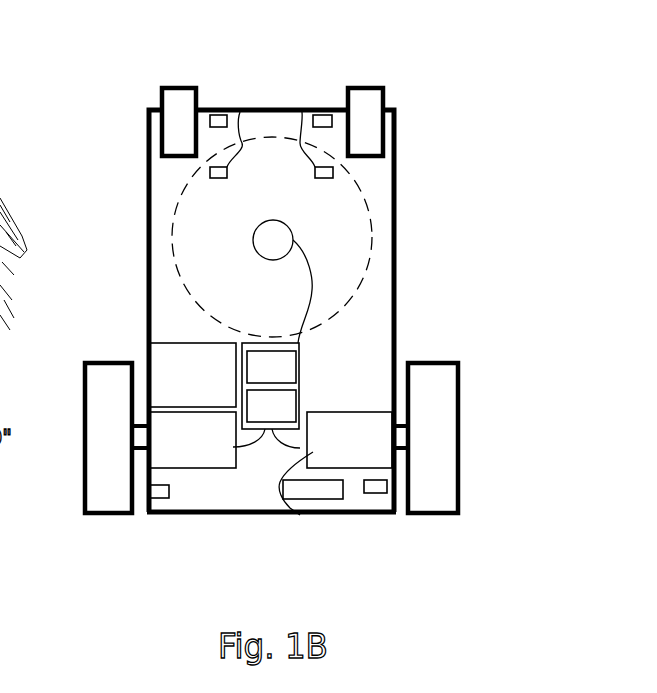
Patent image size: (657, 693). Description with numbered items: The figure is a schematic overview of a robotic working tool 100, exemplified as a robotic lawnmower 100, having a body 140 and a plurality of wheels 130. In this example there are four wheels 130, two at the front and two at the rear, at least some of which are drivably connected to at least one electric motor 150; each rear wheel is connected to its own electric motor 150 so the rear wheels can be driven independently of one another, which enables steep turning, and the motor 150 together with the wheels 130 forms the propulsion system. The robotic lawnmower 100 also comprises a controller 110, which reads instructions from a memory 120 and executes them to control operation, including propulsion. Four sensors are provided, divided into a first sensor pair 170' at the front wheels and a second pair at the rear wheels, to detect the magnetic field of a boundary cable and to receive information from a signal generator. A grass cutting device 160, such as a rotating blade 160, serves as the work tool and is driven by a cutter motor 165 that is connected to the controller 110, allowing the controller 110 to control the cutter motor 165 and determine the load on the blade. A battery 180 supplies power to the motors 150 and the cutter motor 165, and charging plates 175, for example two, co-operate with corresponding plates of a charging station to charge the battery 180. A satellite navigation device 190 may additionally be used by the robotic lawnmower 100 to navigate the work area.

The robotic working tool 100 is at (132, 147).
The controller 110 is at (302, 367).
The memory 120 is at (300, 405).
The wheels 130 is at (272, 81).
The body 140 is at (168, 513).
The electric motor 150 is at (227, 450).
The grass cutting device 160 is at (180, 277).
The cutter motor 165 is at (253, 248).
The first sensor pair 170' is at (271, 73).
The charging plates 175 is at (298, 108).
The battery 180 is at (163, 366).
The satellite navigation device 190 is at (267, 430).